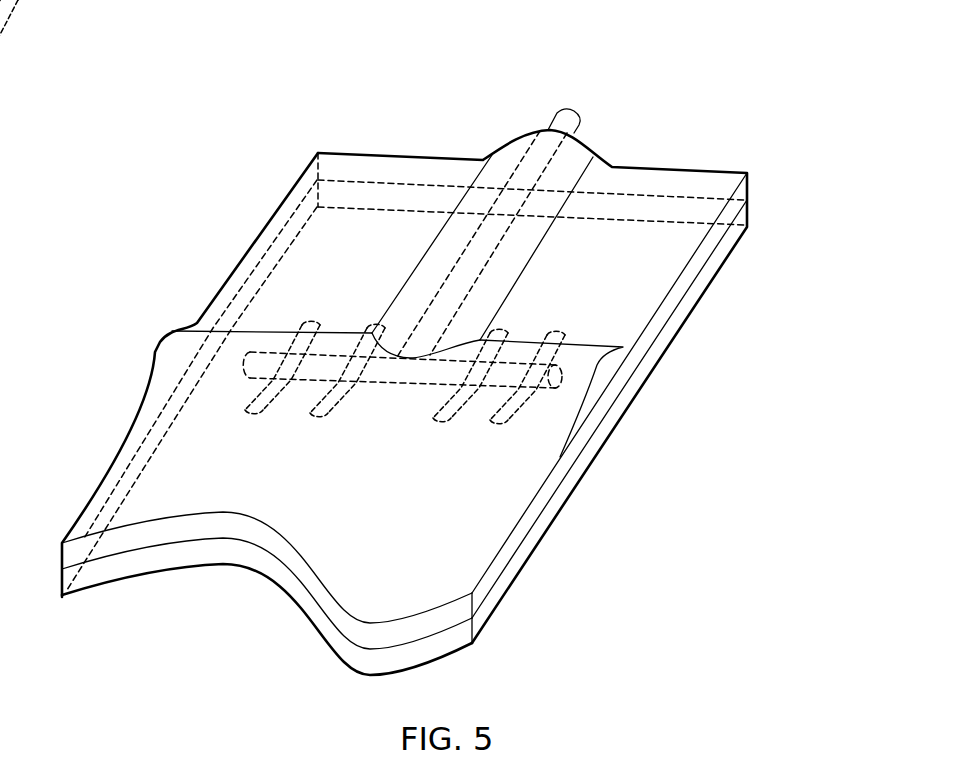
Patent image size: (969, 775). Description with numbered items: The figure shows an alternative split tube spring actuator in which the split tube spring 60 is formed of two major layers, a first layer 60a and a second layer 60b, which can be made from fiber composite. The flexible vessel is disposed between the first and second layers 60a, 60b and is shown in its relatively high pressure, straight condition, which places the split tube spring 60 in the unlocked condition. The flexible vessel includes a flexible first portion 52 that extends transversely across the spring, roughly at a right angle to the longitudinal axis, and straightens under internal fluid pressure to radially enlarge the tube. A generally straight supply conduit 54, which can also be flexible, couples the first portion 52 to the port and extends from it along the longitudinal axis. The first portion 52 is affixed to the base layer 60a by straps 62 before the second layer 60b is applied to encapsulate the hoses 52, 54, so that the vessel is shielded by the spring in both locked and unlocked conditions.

The first portion 52 is at (247, 358).
The supply conduit 54 is at (557, 120).
The split tube spring 60 is at (812, 120).
The first layer 60a is at (602, 392).
The second layer 60b is at (617, 415).
The straps 62 is at (505, 412).